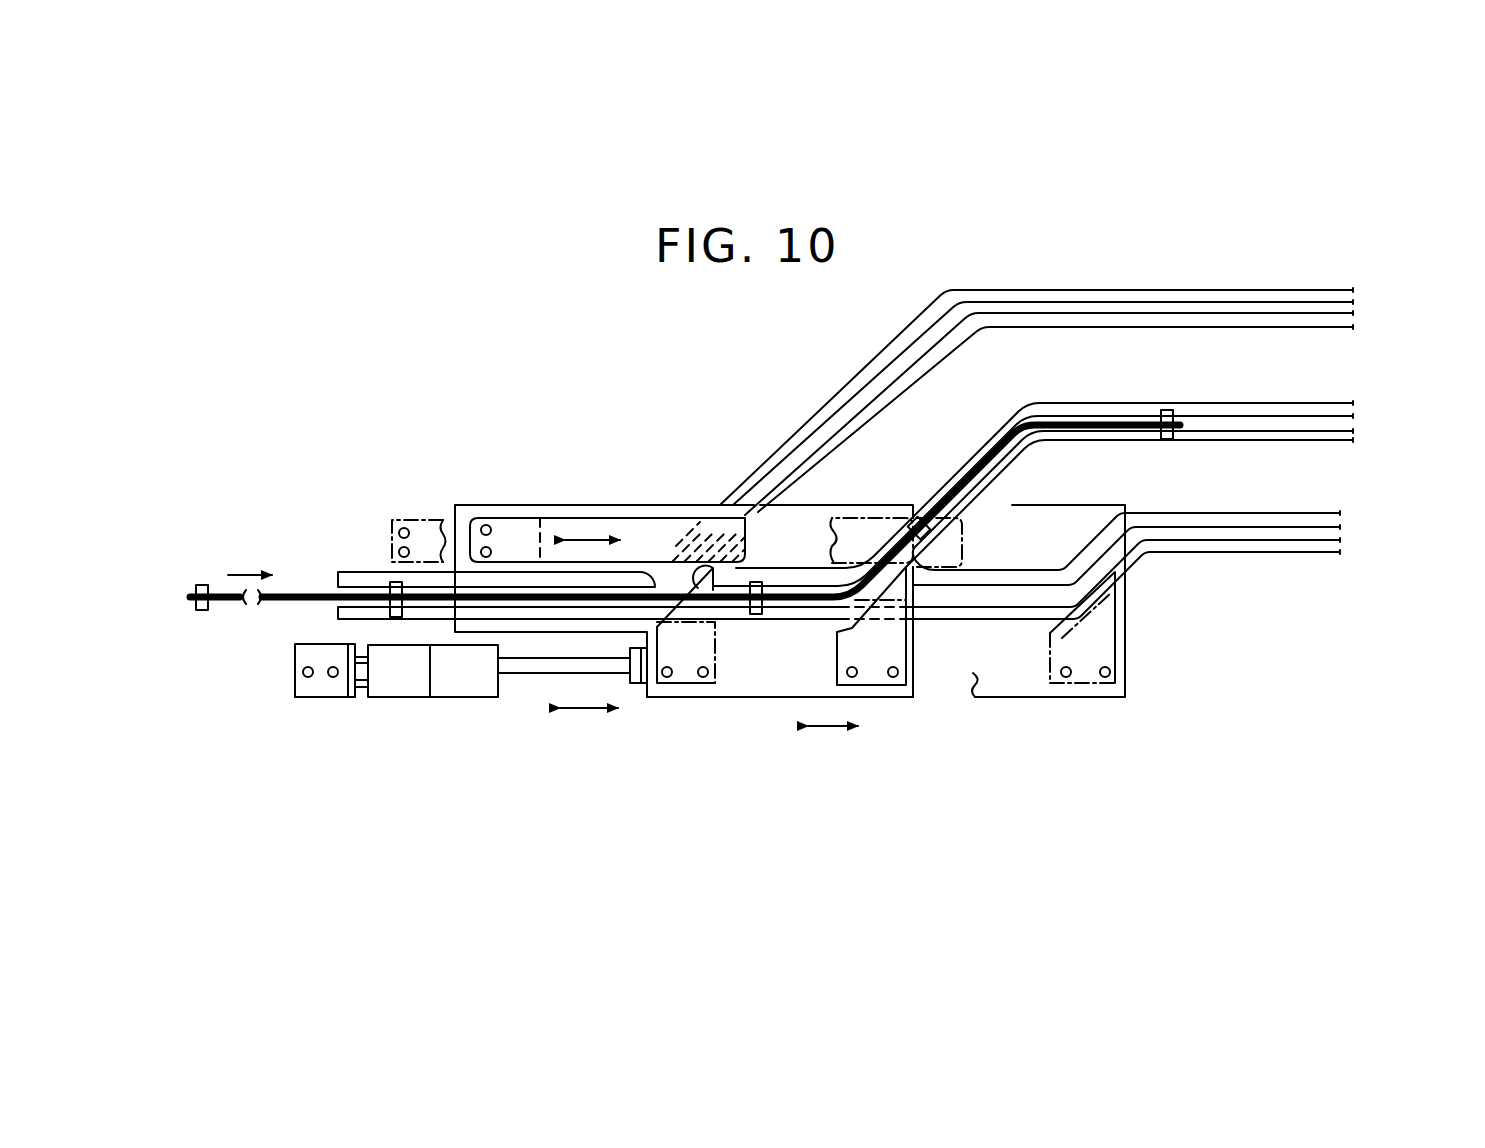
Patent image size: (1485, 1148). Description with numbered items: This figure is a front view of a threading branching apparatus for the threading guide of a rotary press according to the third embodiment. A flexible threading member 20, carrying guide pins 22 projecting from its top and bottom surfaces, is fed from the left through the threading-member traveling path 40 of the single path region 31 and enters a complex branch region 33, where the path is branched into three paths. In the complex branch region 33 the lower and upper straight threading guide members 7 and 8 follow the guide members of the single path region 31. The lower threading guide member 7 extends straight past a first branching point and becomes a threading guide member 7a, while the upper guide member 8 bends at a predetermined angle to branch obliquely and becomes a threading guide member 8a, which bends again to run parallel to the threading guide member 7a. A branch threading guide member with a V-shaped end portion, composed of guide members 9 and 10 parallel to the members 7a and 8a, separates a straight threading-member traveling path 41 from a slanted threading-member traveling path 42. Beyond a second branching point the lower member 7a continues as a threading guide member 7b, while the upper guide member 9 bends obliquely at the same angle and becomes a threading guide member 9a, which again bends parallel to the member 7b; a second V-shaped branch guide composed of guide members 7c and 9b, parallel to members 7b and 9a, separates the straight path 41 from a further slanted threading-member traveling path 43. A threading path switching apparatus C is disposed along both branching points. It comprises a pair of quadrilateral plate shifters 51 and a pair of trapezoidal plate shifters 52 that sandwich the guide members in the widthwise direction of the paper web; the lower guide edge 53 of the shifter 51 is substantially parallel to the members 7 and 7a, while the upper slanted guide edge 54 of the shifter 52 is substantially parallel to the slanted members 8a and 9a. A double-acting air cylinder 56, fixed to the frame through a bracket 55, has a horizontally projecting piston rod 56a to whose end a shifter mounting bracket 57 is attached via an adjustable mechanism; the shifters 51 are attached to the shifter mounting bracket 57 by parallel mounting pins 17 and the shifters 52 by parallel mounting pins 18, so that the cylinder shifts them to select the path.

The lower straight threading guide member 7 is at (347, 608).
The threading guide member 7a is at (780, 618).
The threading guide member 7b is at (1005, 620).
The branch threading guide member 7c is at (997, 572).
The upper straight threading guide member 8 is at (356, 571).
The threading guide member 8a is at (817, 418).
The branch threading guide member 9 is at (778, 572).
The threading guide member 9a is at (966, 460).
The branch threading guide member 9b is at (1027, 451).
The branch threading guide member 10 is at (868, 421).
The mounting pins 17 is at (487, 524).
The mounting pins 18 is at (902, 690).
The threading member 20 is at (305, 596).
The guide pins 22 is at (200, 584).
The single path region 31 is at (374, 556).
The complex branch region 33 is at (938, 645).
The threading-member traveling path 40 is at (326, 576).
The straight threading-member traveling path 41 is at (1357, 539).
The slanted threading-member traveling path 42 is at (1372, 312).
The slanted threading-member traveling path 43 is at (1362, 430).
The shifter 51 is at (582, 517).
The shifter 52 is at (870, 690).
The guide edge 53 is at (635, 580).
The guide edge 54 is at (833, 633).
The bracket 55 is at (300, 698).
The double-acting air cylinder 56 is at (408, 698).
The piston rod 56a is at (540, 674).
The shifter mounting bracket 57 is at (668, 690).
The threading path switching apparatus C is at (731, 446).